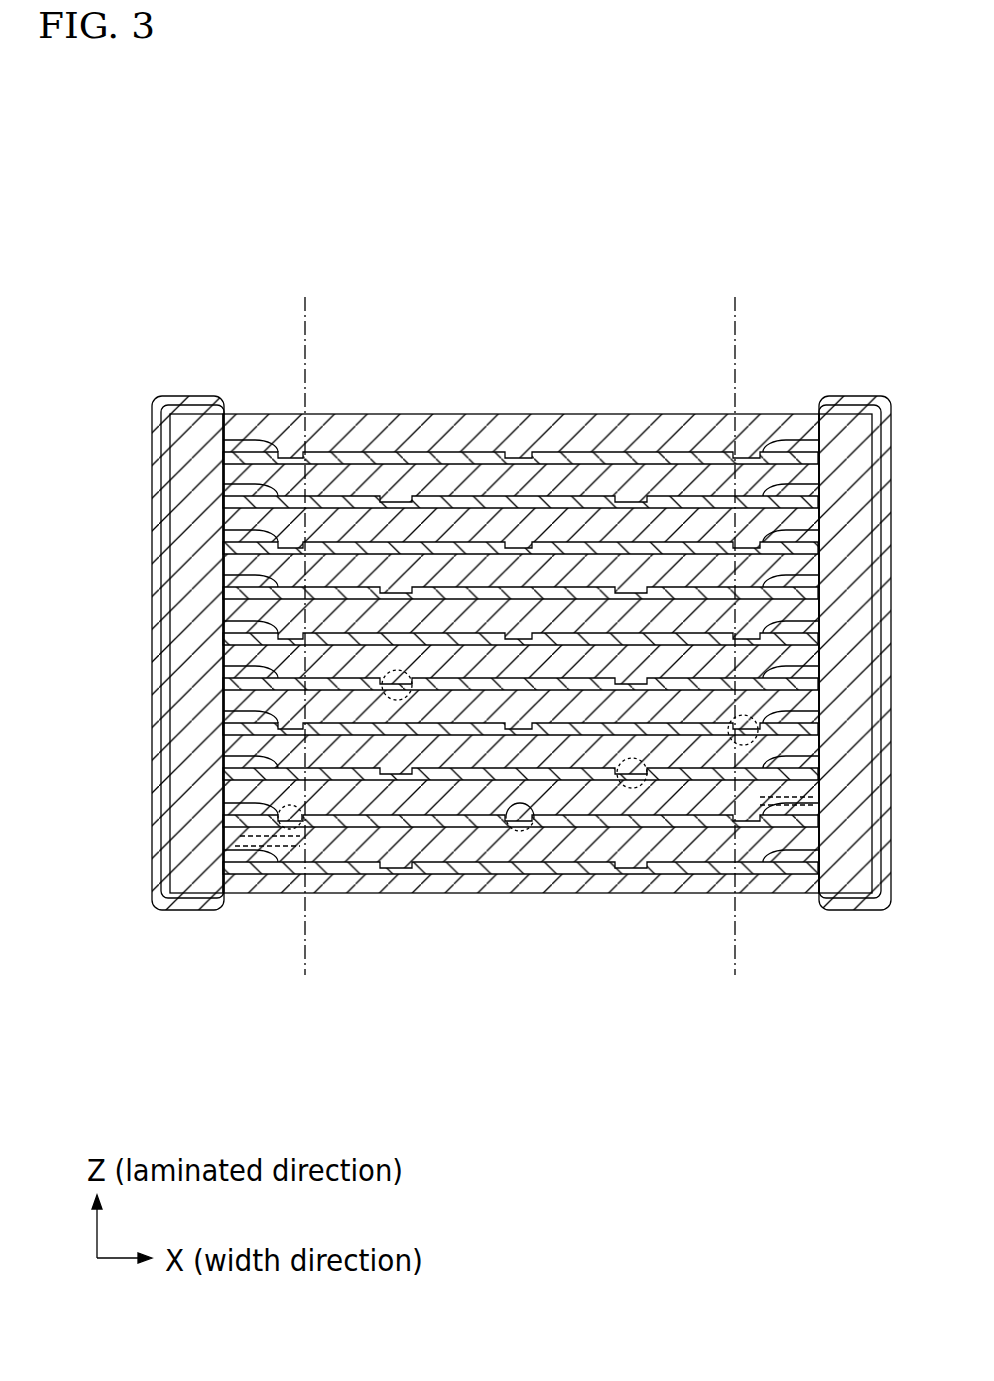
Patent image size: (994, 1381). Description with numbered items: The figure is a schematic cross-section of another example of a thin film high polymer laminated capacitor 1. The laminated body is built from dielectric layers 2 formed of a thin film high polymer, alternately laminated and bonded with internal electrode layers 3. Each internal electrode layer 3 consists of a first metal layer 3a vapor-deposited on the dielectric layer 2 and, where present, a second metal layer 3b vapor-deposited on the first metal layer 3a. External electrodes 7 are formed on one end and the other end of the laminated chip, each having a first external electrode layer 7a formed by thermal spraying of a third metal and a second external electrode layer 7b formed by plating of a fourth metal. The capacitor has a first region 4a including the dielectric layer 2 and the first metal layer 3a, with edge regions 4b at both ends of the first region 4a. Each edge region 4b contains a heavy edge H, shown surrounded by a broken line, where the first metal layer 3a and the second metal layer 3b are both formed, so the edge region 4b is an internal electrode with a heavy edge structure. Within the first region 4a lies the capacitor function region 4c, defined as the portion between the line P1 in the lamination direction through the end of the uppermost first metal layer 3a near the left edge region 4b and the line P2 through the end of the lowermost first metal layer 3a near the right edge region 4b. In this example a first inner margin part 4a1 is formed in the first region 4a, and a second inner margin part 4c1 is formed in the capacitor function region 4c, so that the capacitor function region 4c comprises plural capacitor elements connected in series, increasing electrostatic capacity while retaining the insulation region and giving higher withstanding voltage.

The thin film high polymer laminated capacitor 1 is at (123, 233).
The dielectric layer 2 is at (370, 520).
The internal electrode layer 3 is at (519, 307).
The first metal layer 3a is at (520, 615).
The second metal layer 3b is at (527, 605).
The first region 4a is at (517, 206).
The edge region 4b is at (519, 208).
The capacitor function region 4c is at (519, 291).
The first inner margin part 4a1 is at (525, 840).
The second inner margin part 4c1 is at (520, 835).
The external electrode 7 is at (515, 307).
The first external electrode layer 7a is at (521, 615).
The second external electrode layer 7b is at (524, 624).
The heavy edge H is at (526, 902).
The line P1 is at (309, 636).
The line P2 is at (736, 638).